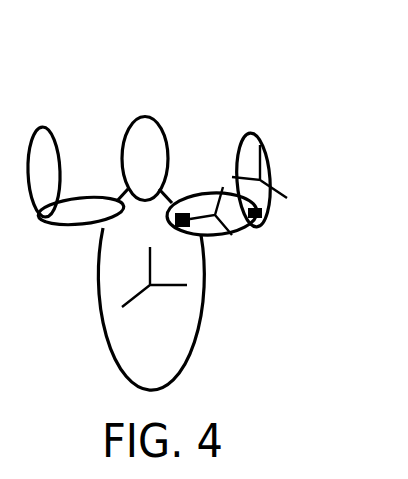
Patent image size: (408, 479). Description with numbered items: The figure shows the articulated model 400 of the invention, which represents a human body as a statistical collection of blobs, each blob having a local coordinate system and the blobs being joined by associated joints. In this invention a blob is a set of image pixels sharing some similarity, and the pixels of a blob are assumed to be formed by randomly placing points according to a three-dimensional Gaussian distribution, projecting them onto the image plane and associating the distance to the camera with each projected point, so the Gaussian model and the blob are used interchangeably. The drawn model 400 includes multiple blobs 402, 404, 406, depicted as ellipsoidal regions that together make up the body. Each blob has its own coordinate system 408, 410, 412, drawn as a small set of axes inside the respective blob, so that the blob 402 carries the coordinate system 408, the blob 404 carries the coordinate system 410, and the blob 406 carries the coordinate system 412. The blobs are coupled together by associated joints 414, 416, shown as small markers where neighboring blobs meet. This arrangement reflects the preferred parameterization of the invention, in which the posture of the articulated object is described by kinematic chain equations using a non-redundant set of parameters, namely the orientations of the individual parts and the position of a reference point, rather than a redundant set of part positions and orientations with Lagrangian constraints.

The articulated model 400 is at (105, 87).
The blob 402 is at (107, 273).
The blob 404 is at (212, 232).
The blob 406 is at (248, 150).
The coordinate system 408 is at (167, 287).
The coordinate system 410 is at (250, 233).
The coordinate system 412 is at (283, 195).
The joint 414 is at (181, 203).
The joint 416 is at (263, 213).